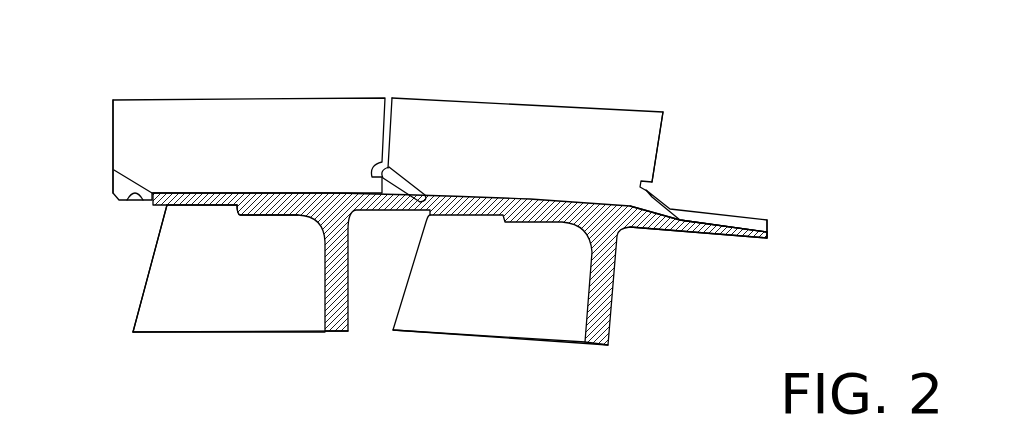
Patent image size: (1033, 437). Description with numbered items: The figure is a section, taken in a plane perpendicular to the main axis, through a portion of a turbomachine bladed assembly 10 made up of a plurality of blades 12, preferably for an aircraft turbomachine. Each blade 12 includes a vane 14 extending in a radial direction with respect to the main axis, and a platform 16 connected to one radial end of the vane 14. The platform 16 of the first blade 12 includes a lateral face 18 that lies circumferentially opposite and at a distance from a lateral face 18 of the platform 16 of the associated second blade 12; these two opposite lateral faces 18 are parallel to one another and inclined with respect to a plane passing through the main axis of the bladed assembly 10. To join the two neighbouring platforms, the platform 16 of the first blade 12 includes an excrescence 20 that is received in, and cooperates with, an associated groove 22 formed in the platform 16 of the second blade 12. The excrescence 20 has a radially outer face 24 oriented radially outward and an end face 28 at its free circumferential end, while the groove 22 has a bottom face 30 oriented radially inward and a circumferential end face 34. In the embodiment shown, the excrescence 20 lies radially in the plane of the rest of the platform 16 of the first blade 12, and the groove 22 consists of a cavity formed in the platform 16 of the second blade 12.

The turbomachine bladed assembly 10 is at (755, 57).
The blade 12 is at (221, 345).
The vane 14 is at (160, 337).
The platform 16 is at (229, 92).
The lateral face 18 is at (112, 137).
The excrescence 20 is at (737, 198).
The groove 22 is at (146, 274).
The radially outer face 24 is at (760, 217).
The end face 28 is at (770, 238).
The bottom face 30 is at (187, 207).
The circumferential end face 34 is at (236, 212).